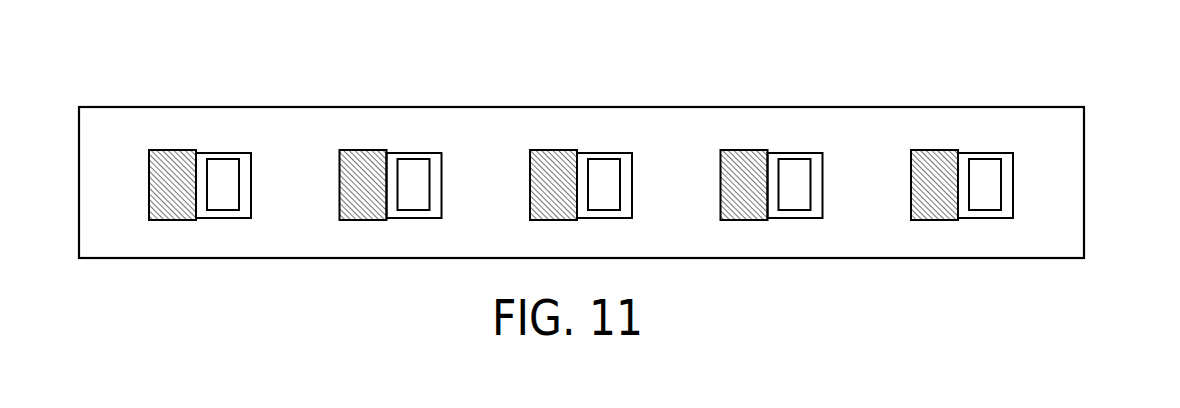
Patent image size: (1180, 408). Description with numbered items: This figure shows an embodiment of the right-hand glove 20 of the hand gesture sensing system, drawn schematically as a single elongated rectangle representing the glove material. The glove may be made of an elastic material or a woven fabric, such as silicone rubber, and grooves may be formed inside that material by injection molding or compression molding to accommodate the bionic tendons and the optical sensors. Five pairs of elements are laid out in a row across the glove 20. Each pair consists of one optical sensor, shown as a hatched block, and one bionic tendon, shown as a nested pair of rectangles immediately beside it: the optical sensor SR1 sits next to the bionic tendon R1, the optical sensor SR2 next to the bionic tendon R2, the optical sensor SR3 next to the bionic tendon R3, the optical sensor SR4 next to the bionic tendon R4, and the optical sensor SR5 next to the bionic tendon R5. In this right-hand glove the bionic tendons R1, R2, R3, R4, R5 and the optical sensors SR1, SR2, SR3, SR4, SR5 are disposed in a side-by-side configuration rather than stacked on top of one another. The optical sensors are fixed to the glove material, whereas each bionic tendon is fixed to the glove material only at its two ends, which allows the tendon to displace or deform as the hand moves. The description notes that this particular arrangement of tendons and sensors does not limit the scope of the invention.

The right-hand glove 20 is at (1084, 145).
The optical sensor SR1 is at (165, 150).
The optical sensor SR2 is at (356, 150).
The optical sensor SR3 is at (546, 150).
The optical sensor SR4 is at (736, 150).
The optical sensor SR5 is at (927, 150).
The bionic tendon R1 is at (225, 175).
The bionic tendon R2 is at (416, 175).
The bionic tendon R3 is at (606, 175).
The bionic tendon R4 is at (796, 175).
The bionic tendon R5 is at (987, 175).